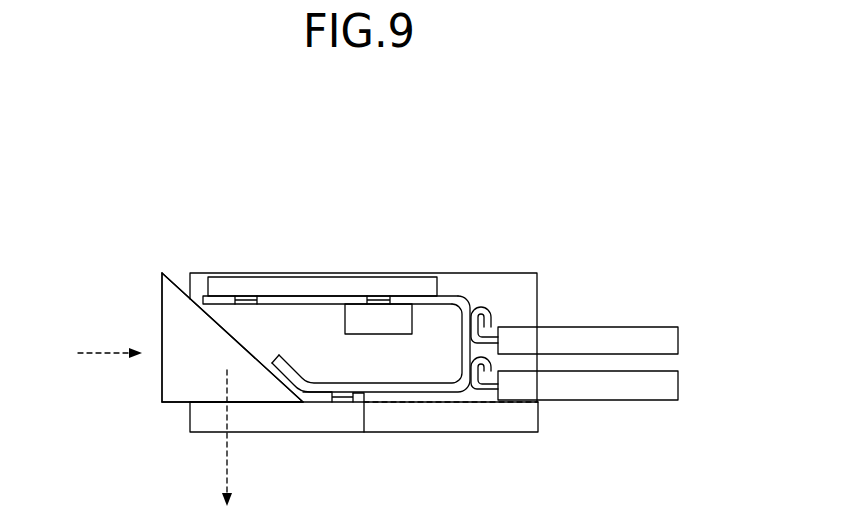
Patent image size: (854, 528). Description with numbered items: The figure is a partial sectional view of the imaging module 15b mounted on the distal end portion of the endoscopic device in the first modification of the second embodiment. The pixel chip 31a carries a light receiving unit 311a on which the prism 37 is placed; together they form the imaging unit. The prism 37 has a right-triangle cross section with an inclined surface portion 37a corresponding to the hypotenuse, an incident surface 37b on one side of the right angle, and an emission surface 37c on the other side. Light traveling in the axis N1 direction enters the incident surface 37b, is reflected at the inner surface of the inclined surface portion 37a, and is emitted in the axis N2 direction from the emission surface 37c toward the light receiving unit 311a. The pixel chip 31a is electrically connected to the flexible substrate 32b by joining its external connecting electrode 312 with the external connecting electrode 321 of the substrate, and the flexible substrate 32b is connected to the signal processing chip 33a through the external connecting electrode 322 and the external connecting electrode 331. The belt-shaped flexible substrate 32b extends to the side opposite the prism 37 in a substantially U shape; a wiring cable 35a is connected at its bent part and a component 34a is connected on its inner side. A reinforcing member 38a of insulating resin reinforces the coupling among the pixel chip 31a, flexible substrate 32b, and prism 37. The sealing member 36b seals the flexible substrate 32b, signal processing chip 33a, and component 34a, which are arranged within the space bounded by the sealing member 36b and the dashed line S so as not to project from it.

The imaging module 15b is at (608, 190).
The pixel chip 31a is at (247, 422).
The light receiving unit 311a is at (194, 392).
The external connecting electrode 312 is at (352, 403).
The flexible substrate 32b is at (458, 297).
The external connecting electrode 321 is at (343, 392).
The external connecting electrode 322 is at (247, 304).
The external connecting electrode 331 is at (243, 297).
The signal processing chip 33a is at (308, 285).
The component 34a is at (397, 310).
The wiring cable 35a is at (607, 335).
The sealing member 36b is at (475, 432).
The prism 37 is at (176, 310).
The inclined surface portion 37a is at (175, 282).
The incident surface 37b is at (162, 363).
The emission surface 37c is at (207, 403).
The reinforcing member 38a is at (315, 397).
The dashed line S is at (420, 396).
The axis N1 is at (90, 347).
The axis N2 is at (223, 478).